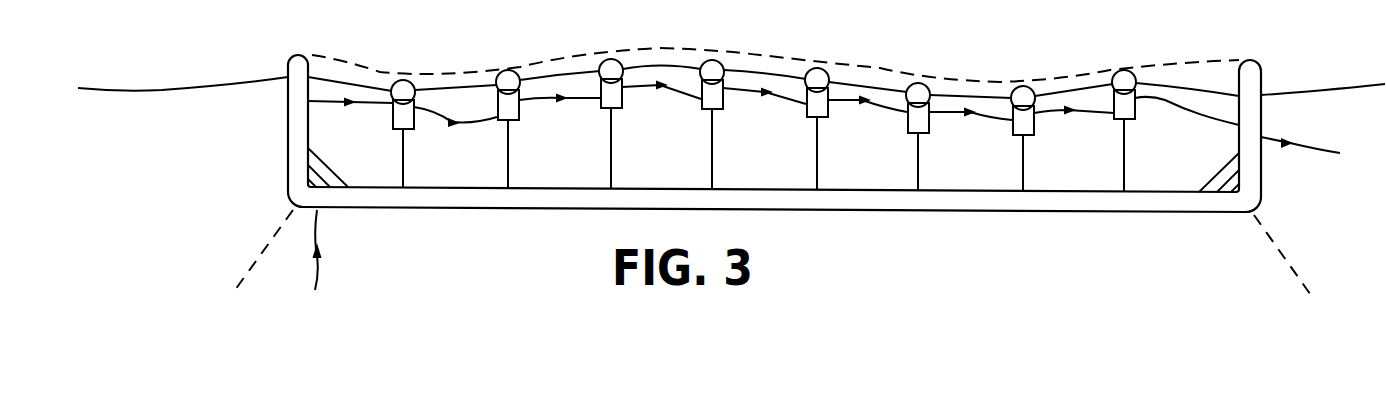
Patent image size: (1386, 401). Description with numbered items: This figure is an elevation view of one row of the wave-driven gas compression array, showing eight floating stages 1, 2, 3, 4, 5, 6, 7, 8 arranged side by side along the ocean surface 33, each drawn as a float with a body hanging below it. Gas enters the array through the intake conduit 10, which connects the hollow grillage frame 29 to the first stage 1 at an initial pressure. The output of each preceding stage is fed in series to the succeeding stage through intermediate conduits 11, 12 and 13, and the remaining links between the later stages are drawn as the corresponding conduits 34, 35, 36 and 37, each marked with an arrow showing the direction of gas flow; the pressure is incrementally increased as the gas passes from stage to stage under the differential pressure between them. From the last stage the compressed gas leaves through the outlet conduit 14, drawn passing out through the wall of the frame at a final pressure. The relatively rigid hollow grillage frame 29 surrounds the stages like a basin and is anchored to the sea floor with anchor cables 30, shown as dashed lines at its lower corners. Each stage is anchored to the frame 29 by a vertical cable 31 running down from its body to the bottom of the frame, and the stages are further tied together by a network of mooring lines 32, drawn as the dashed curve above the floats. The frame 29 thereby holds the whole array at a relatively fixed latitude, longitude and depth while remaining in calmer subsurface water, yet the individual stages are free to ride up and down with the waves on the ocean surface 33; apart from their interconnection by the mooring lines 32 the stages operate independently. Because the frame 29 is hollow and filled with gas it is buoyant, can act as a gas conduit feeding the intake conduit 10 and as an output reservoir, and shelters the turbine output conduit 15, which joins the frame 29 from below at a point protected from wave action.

The initial stage 1 is at (398, 78).
The stage 2 is at (496, 70).
The stage 3 is at (606, 59).
The stage 4 is at (712, 60).
The stage 5 is at (818, 68).
The stage 6 is at (917, 83).
The stage 7 is at (1026, 86).
The stage 8 is at (1128, 70).
The intake conduit 10 is at (326, 103).
The intermediate conduit 11 is at (455, 125).
The intermediate conduit 12 is at (576, 100).
The intermediate conduit 13 is at (672, 88).
The outlet conduit 14 is at (1298, 147).
The turbine output conduit 15 is at (320, 272).
The hollow grillage frame 29 is at (1155, 213).
The anchor cables 30 is at (245, 276).
The vertical cables 31 is at (403, 143).
The mooring lines 32 is at (350, 56).
The ocean surface 33 is at (163, 89).
The flow path segment between fourth and fifth floats 34 is at (787, 104).
The flow path segment between fifth and sixth floats 35 is at (870, 105).
The flow path segment between sixth and seventh floats 36 is at (985, 115).
The flow path segment between seventh and eighth floats 37 is at (1085, 113).